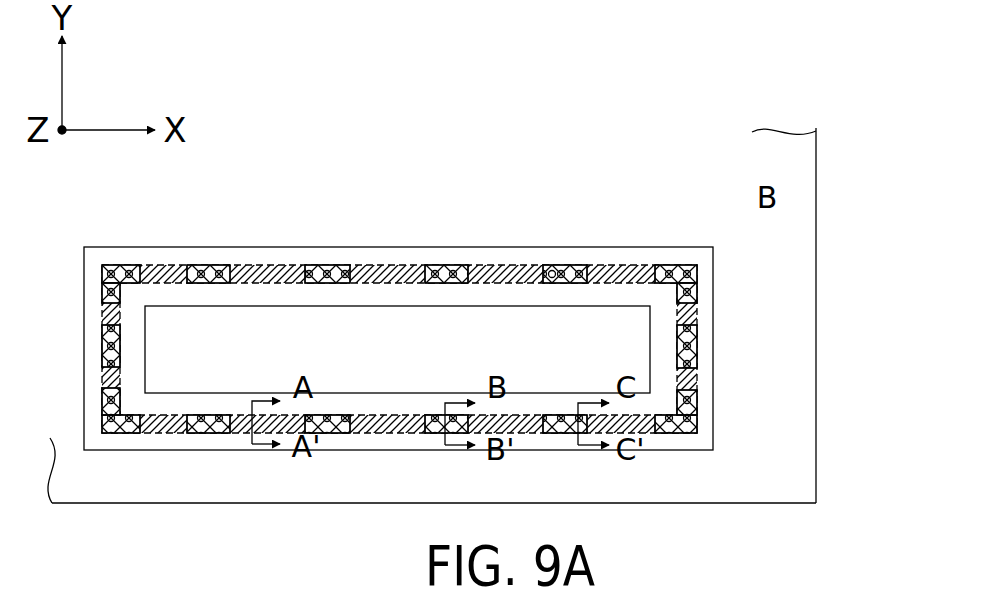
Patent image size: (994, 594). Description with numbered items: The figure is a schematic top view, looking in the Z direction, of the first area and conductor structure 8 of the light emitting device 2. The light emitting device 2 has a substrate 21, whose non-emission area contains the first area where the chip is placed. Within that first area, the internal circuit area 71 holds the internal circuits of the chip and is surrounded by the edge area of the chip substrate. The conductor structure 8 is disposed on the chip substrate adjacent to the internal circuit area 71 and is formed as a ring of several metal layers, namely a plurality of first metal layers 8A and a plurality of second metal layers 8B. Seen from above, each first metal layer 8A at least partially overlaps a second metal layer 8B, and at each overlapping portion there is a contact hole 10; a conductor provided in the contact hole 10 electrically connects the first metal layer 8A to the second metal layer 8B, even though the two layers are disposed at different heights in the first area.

The light emitting device 2 is at (816, 247).
The substrate 21 is at (780, 392).
The conductor structure 8 is at (401, 293).
The first metal layer 8A is at (167, 270).
The second metal layer 8B is at (328, 288).
The contact hole 10 is at (553, 270).
The internal circuit area 71 is at (155, 358).